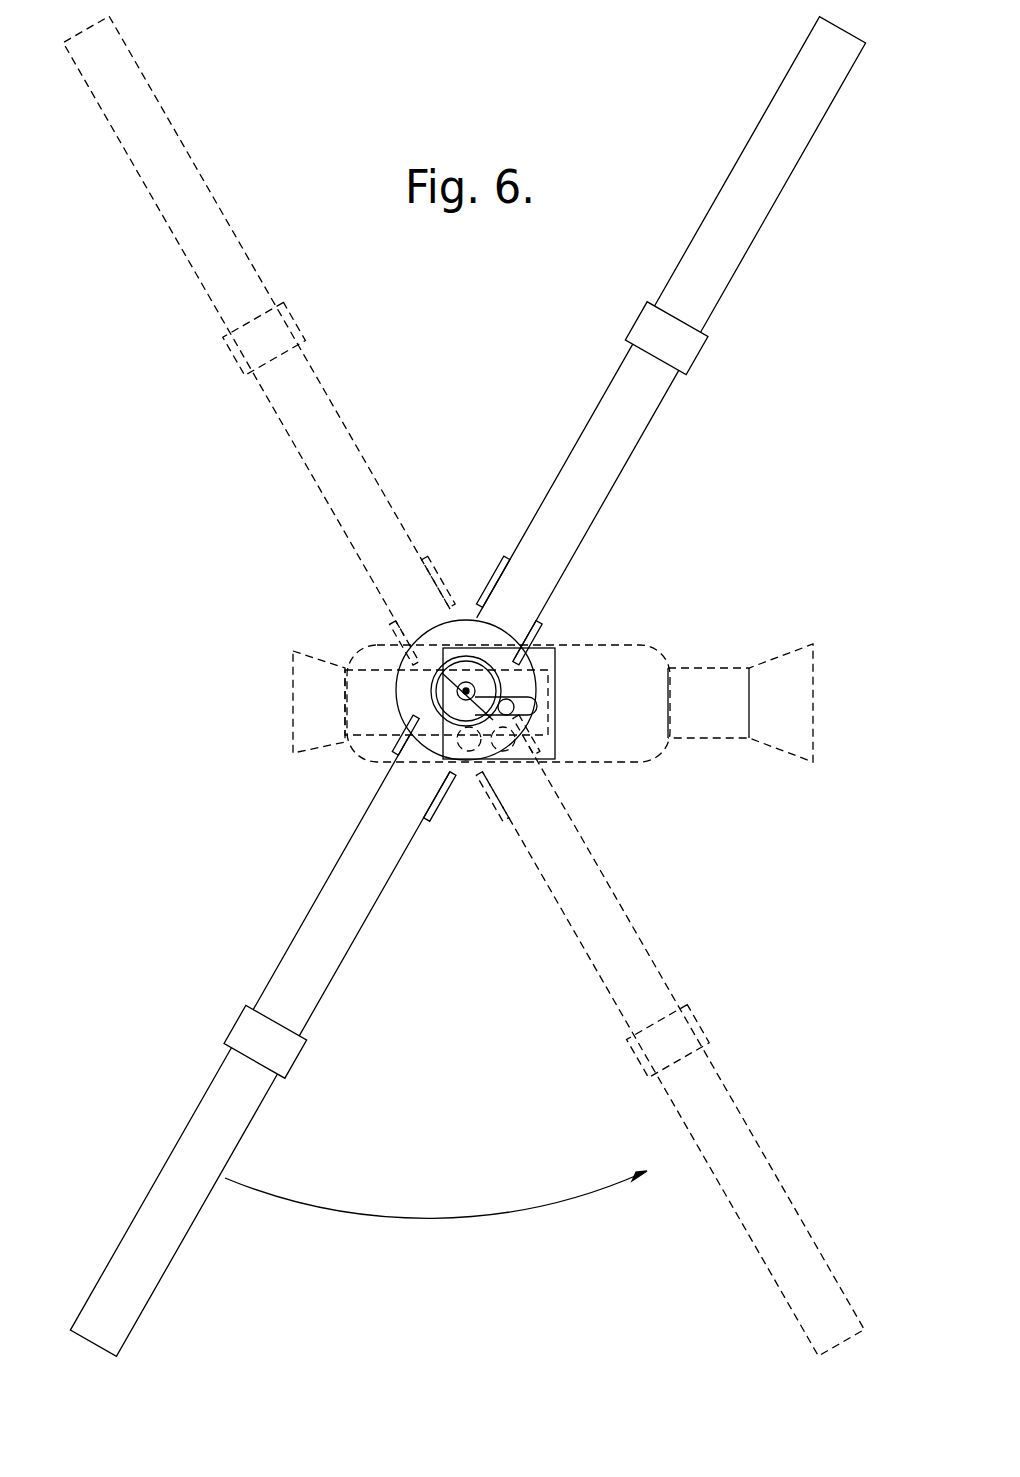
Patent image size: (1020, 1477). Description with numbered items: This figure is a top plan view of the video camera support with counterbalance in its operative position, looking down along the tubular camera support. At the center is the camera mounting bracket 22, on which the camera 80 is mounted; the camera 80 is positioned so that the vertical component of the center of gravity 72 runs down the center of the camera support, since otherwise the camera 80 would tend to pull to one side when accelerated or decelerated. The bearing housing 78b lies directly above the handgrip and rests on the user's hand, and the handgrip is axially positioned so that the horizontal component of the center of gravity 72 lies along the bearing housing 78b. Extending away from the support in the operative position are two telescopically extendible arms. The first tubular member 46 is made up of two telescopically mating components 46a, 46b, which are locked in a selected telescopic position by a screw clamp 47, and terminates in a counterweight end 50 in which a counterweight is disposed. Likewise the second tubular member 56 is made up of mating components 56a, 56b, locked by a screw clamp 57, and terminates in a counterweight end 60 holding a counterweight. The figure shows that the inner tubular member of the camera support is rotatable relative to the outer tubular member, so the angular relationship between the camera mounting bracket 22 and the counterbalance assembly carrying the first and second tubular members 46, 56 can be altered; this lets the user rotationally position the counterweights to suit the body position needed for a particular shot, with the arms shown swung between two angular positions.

The counterweight end 60 is at (828, 56).
The telescopically mating component 56b is at (745, 200).
The second tubular member 56 is at (666, 338).
The screw clamp 57 is at (666, 338).
The telescopically mating component 56a is at (608, 353).
The center of gravity 72 is at (440, 673).
The bearing housing 78b is at (393, 697).
The camera 80 is at (617, 645).
The camera mounting bracket 22 is at (556, 722).
The telescopically mating component 46a is at (359, 877).
The first tubular member 46 is at (268, 1037).
The screw clamp 47 is at (265, 1041).
The telescopically mating component 46b is at (186, 1179).
The counterweight end 50 is at (106, 1320).